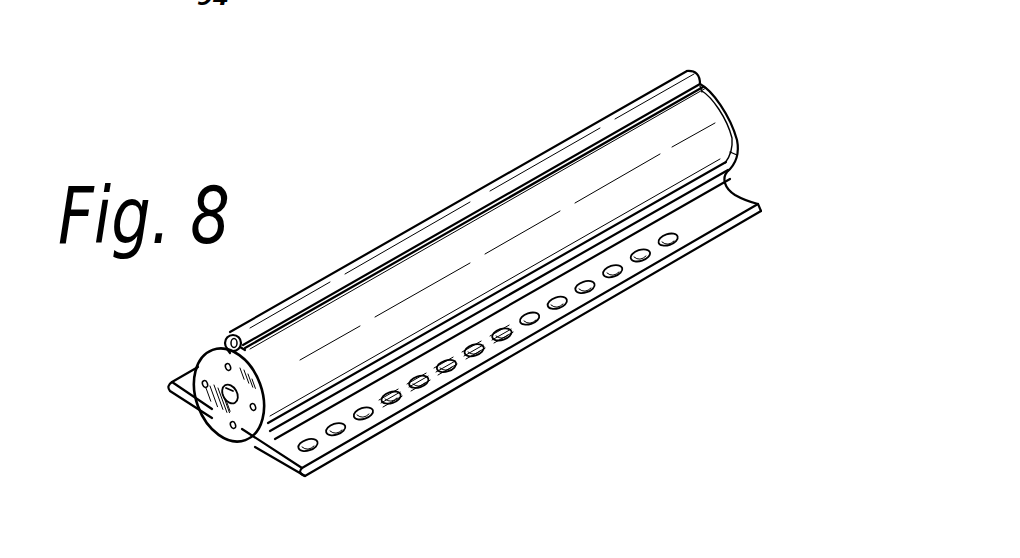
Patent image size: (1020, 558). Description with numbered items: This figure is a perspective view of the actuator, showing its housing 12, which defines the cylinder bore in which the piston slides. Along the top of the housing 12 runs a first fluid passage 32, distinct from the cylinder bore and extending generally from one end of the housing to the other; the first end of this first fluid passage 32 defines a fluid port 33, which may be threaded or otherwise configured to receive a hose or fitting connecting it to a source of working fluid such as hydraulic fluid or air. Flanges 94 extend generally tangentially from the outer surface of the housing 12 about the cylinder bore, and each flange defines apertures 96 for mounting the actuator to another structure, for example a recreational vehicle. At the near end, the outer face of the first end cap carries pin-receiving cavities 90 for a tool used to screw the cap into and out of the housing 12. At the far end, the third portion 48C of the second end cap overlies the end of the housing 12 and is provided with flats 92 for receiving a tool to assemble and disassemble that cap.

The housing 12 is at (694, 120).
The first fluid passage 32 is at (252, 322).
The fluid port 33 is at (225, 339).
The third portion of second end cap 48C is at (745, 165).
The pin-receiving cavities 90 is at (252, 409).
The flats 92 is at (731, 130).
The flanges 94 is at (385, 410).
The apertures 96 is at (514, 338).